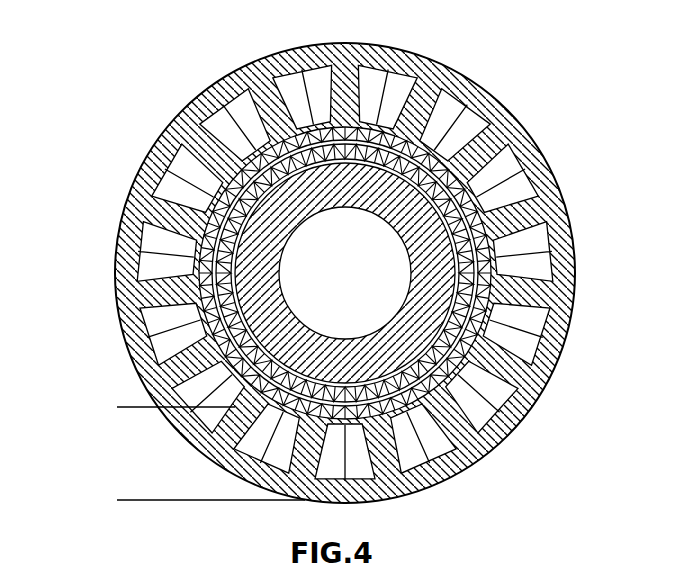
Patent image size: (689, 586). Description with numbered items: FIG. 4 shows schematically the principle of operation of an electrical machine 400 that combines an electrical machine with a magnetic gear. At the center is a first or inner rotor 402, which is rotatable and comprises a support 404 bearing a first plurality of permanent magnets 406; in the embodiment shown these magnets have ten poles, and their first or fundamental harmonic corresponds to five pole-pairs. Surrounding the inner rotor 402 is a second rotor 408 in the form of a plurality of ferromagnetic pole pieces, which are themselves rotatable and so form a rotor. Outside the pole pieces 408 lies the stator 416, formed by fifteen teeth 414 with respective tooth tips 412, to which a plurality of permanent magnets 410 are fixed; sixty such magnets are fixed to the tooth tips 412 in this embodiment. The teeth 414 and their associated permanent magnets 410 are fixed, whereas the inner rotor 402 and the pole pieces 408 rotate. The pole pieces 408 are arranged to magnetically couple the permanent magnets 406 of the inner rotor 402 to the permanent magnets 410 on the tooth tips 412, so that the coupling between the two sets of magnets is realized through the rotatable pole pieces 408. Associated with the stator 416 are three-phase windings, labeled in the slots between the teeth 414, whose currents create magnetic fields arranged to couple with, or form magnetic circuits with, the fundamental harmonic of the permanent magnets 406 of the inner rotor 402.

The electrical machine 400 is at (480, 70).
The first or inner rotor 402 is at (333, 248).
The support 404 is at (272, 254).
The first plurality of permanent magnets 406 is at (235, 312).
The second rotor / ferromagnetic pole pieces 408 is at (475, 165).
The plurality of permanent magnets 410 is at (212, 176).
The tooth tips 412 is at (205, 298).
The teeth 414 is at (128, 210).
The stator 416 is at (117, 407).